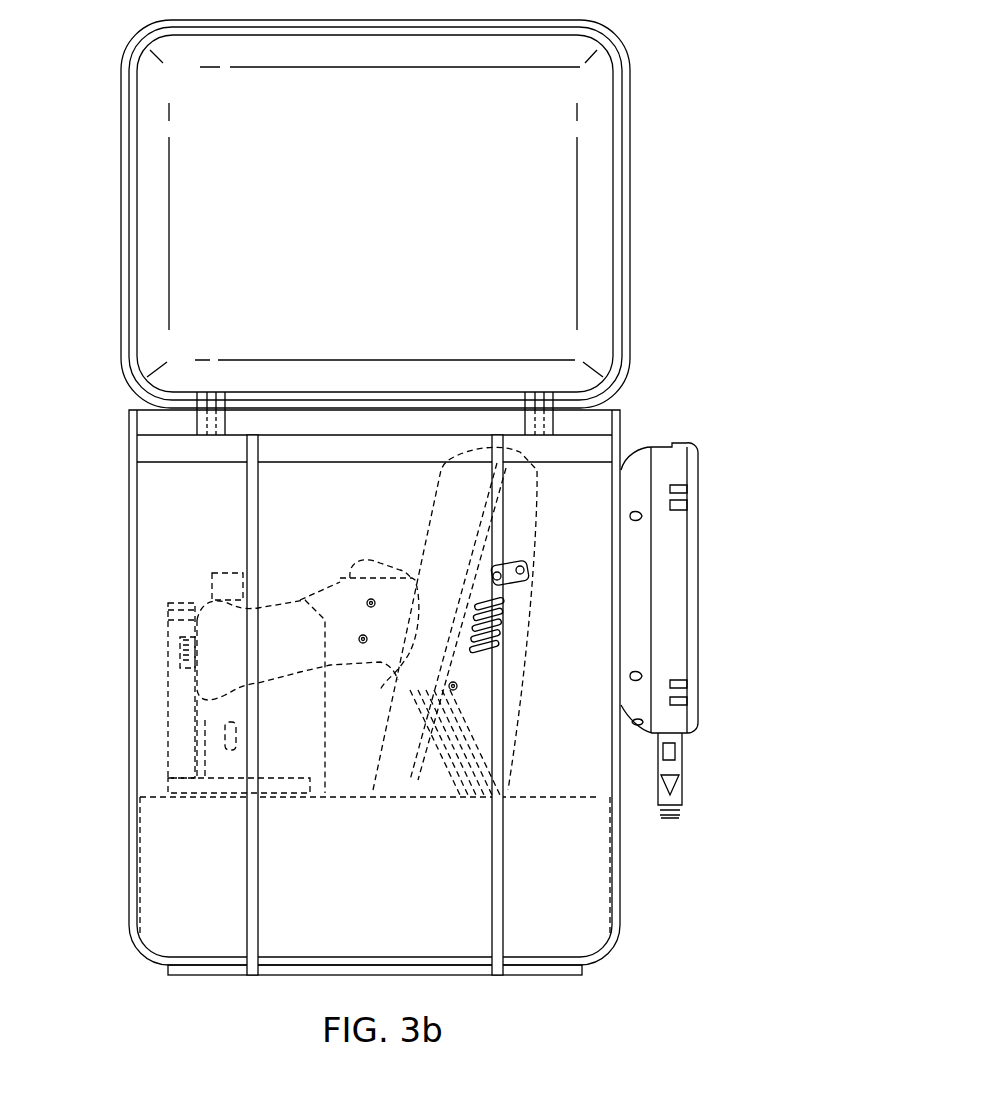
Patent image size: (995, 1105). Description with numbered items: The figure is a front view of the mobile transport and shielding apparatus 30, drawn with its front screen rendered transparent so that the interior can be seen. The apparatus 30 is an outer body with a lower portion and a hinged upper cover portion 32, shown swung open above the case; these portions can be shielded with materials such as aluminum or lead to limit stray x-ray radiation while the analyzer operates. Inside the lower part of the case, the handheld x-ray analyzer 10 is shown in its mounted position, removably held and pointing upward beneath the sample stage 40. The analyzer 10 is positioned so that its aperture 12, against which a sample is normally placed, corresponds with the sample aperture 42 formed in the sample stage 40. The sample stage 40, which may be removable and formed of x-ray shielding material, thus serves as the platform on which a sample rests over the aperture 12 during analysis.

The handheld x-ray analyzer 10 is at (511, 736).
The aperture 12 is at (525, 447).
The mobile transport and shielding apparatus 30 is at (454, 497).
The upper cover portion 32 is at (183, 229).
The sample stage 40 is at (312, 422).
The sample aperture 42 is at (511, 432).